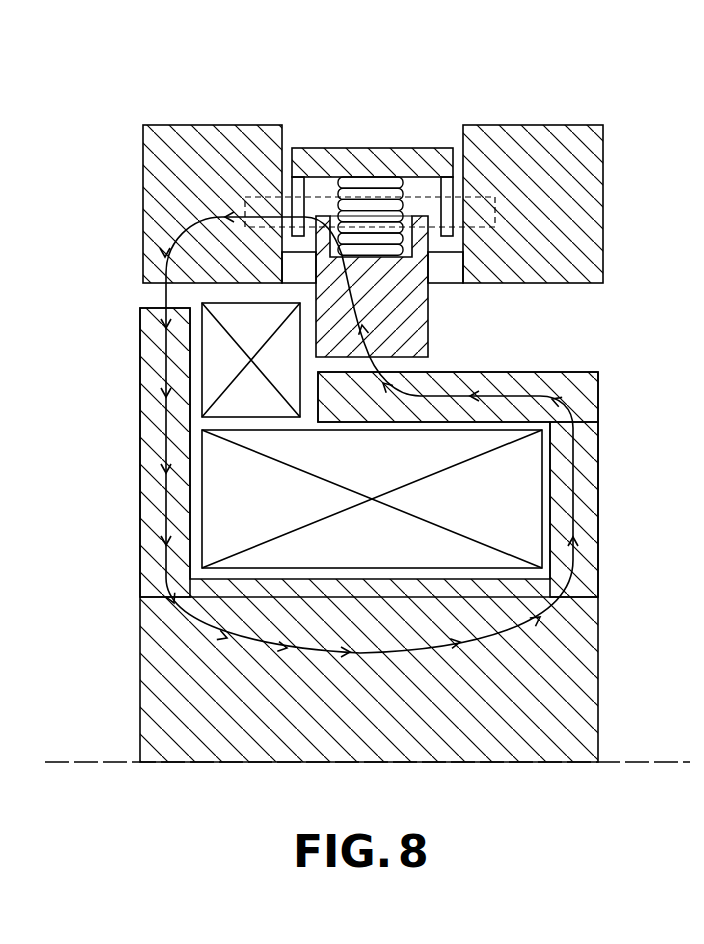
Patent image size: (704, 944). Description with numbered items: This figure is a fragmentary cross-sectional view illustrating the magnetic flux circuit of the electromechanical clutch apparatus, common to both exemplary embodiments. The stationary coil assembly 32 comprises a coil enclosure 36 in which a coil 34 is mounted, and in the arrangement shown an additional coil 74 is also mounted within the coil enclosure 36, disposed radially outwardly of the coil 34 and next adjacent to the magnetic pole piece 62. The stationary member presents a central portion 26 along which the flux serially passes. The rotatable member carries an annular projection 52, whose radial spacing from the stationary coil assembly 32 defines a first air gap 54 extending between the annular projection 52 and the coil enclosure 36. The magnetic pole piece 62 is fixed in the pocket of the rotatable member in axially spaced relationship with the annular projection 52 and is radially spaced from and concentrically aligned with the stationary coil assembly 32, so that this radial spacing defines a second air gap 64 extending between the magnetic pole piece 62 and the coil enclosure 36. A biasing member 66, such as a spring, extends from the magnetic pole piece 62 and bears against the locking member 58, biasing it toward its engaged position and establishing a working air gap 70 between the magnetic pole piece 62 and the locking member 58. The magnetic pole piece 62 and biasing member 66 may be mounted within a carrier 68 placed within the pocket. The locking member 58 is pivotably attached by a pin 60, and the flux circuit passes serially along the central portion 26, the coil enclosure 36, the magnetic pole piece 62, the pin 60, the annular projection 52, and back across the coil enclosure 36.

The central portion 26 is at (443, 762).
The stationary coil assembly 32 is at (138, 373).
The coil 34 is at (237, 568).
The coil enclosure 36 is at (140, 540).
The annular projection 52 is at (187, 130).
The first air gap 54 is at (150, 297).
The locking member 58 is at (333, 147).
The pin 60 is at (330, 188).
The magnetic pole piece 62 is at (413, 305).
The second air gap 64 is at (418, 362).
The biasing member 66 is at (400, 190).
The carrier 68 is at (455, 257).
The working air gap 70 is at (327, 185).
The additional coil 74 is at (202, 356).